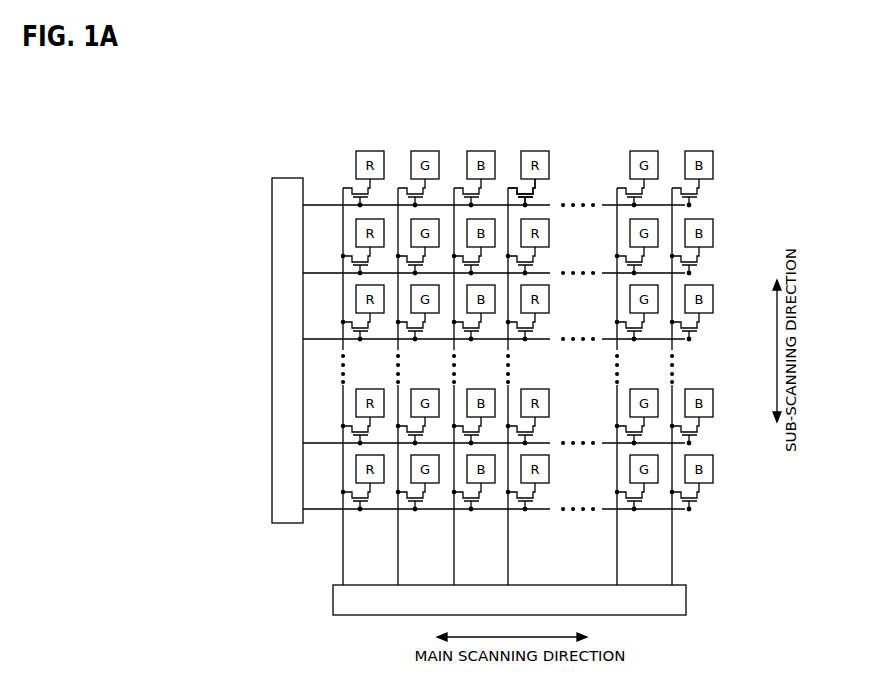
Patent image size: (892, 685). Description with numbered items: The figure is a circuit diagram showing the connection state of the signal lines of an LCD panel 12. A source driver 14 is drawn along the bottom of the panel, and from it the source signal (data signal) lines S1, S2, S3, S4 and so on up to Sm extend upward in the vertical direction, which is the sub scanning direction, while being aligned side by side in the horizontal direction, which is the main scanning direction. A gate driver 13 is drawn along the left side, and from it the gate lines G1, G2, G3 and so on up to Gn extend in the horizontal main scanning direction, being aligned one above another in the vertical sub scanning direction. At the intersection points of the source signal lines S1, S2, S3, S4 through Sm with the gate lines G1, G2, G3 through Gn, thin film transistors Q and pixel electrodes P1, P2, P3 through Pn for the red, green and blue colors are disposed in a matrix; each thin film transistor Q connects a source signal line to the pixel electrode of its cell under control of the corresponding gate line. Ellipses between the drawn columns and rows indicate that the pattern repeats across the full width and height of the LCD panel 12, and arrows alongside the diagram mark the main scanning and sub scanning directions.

The LCD panel 12 is at (738, 128).
The gate driver 13 is at (291, 178).
The source driver 14 is at (686, 597).
The gate line G1 is at (328, 205).
The gate line G2 is at (328, 273).
The gate line G3 is at (328, 339).
The gate line Gn is at (328, 509).
The source signal line S1 is at (343, 549).
The source signal line S2 is at (398, 549).
The source signal line S3 is at (454, 549).
The source signal line S4 is at (508, 549).
The source signal line Sm is at (672, 547).
The pixel electrode P1 is at (713, 163).
The pixel electrode P2 is at (713, 231).
The pixel electrode P3 is at (713, 297).
The pixel electrode Pn is at (713, 467).
The thin film transistor Q is at (530, 196).